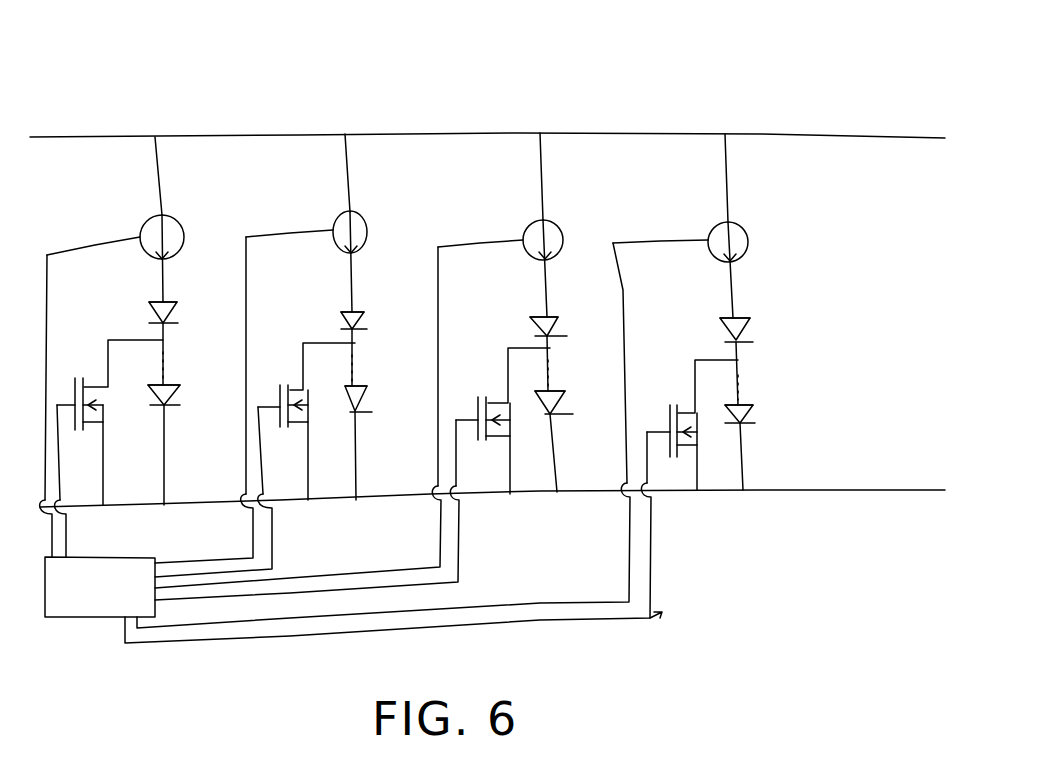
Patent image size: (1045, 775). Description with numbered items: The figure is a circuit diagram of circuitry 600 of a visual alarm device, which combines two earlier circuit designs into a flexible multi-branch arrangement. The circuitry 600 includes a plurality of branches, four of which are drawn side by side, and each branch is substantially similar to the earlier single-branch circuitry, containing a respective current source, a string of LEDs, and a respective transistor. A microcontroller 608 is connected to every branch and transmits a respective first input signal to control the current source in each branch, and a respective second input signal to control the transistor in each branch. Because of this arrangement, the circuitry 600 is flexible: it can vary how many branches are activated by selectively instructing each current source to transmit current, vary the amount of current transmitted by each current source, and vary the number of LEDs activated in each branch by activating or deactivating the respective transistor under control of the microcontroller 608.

The circuitry 600 is at (873, 100).
The microcontroller 608 is at (78, 622).